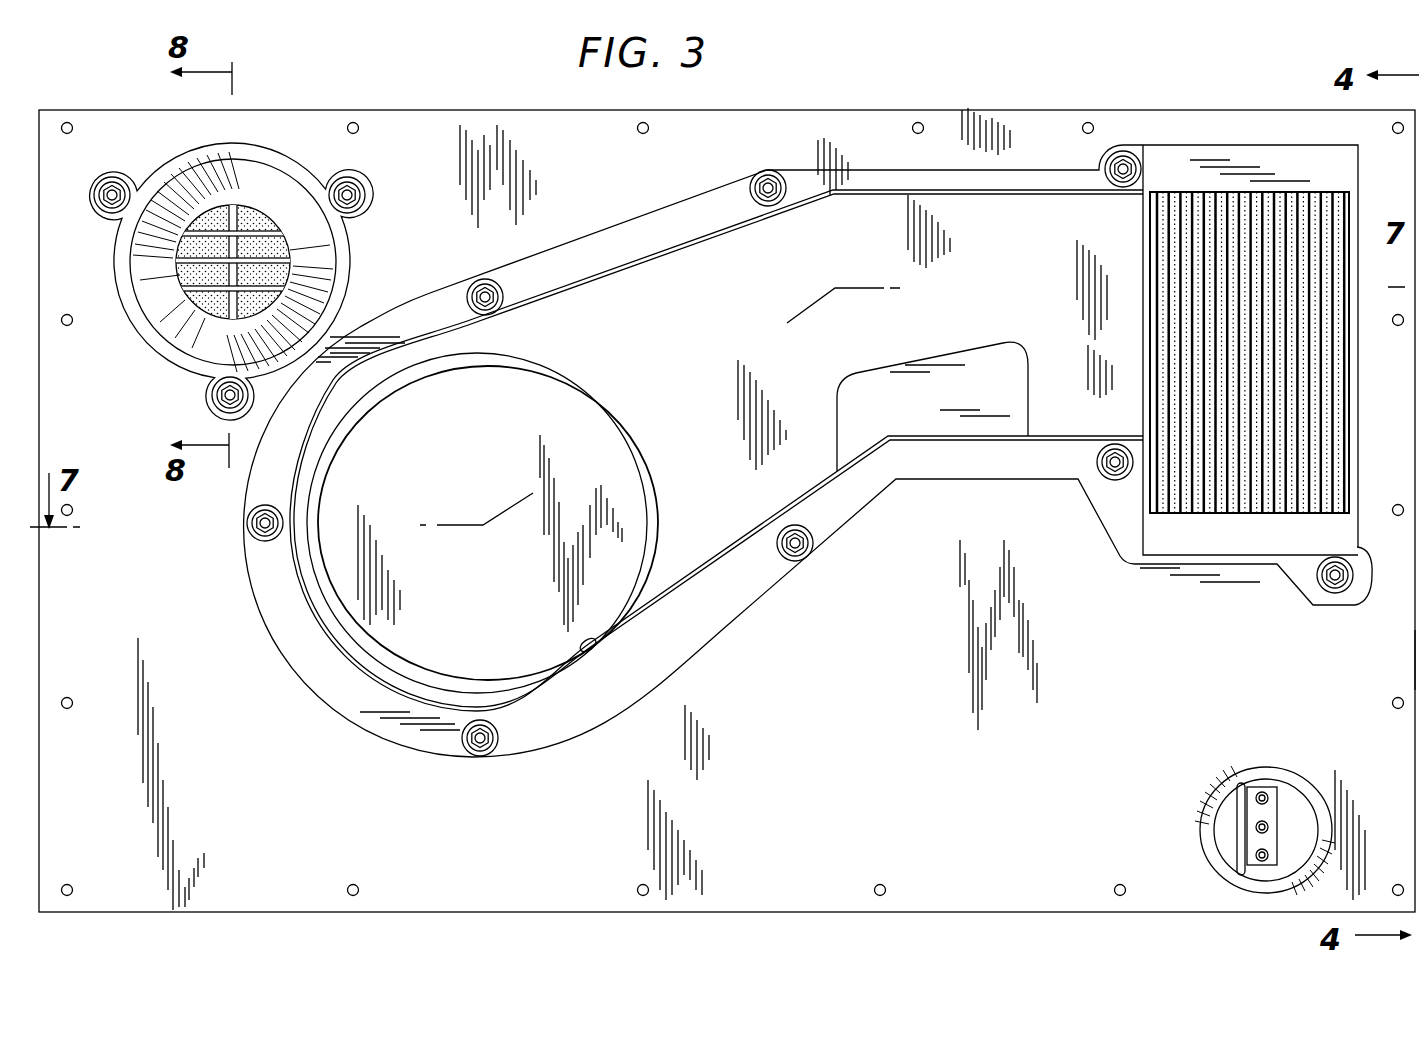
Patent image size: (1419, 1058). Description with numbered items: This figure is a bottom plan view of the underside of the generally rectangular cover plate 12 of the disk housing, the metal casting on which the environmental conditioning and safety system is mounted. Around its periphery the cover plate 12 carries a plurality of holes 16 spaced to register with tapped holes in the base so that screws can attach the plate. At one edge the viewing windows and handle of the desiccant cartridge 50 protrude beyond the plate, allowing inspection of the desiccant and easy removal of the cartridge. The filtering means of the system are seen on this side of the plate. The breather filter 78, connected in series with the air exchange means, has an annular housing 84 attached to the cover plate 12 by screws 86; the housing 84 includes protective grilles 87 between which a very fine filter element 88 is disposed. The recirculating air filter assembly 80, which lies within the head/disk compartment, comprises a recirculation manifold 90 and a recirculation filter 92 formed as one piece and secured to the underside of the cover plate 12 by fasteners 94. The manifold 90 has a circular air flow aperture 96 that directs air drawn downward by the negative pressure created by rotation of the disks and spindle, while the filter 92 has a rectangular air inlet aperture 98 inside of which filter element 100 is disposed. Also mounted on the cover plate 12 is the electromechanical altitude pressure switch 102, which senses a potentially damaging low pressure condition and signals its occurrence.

The cover plate 12 is at (790, 109).
The holes 16 is at (1085, 123).
The desiccant cartridge 50 is at (1418, 655).
The breather filter 78 is at (165, 383).
The recirculating air filter assembly 80 is at (955, 500).
The annular housing 84 is at (325, 270).
The screws 86 is at (225, 407).
The protective grilles 87 is at (217, 303).
The filter element 88 is at (277, 245).
The recirculation manifold 90 is at (725, 625).
The recirculation filter 92 is at (1362, 547).
The fasteners 94 is at (1316, 585).
The circular air flow aperture 96 is at (592, 648).
The rectangular air inlet aperture 98 is at (1233, 507).
The filter element 100 is at (1150, 403).
The altitude pressure switch 102 is at (1186, 803).